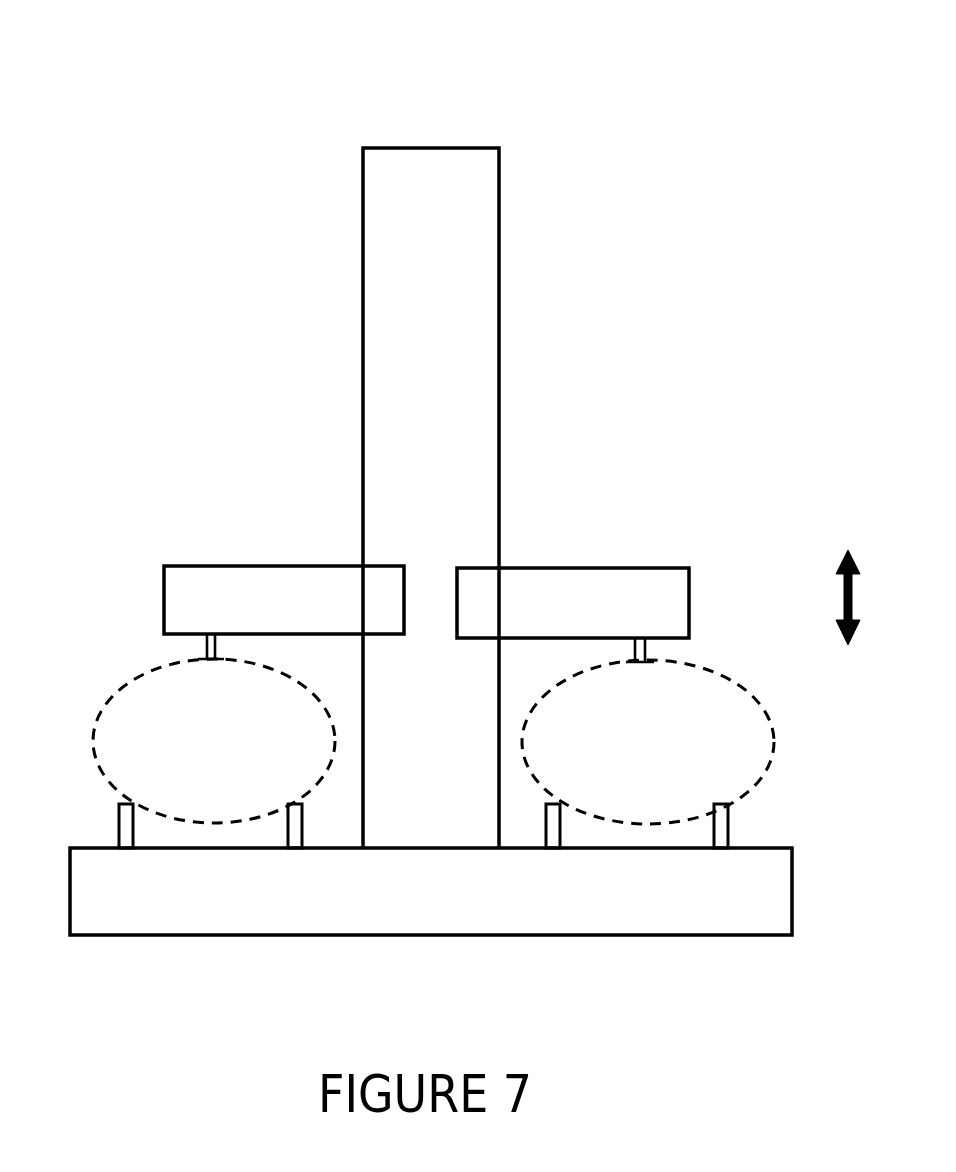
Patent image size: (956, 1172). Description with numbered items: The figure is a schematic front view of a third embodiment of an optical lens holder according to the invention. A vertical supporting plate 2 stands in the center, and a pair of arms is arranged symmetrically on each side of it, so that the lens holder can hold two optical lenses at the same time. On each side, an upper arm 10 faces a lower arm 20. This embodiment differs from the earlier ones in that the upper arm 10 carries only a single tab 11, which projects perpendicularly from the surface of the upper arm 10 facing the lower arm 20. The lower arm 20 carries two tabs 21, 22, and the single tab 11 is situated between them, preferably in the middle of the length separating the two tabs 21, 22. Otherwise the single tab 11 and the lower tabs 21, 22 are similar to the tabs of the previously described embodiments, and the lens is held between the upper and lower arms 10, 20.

The vertical supporting plate 2 is at (440, 167).
The upper arm 10 is at (565, 568).
The single tab 11 is at (647, 648).
The lower arm 20 is at (462, 904).
The tab 21 is at (722, 832).
The tab 22 is at (560, 823).